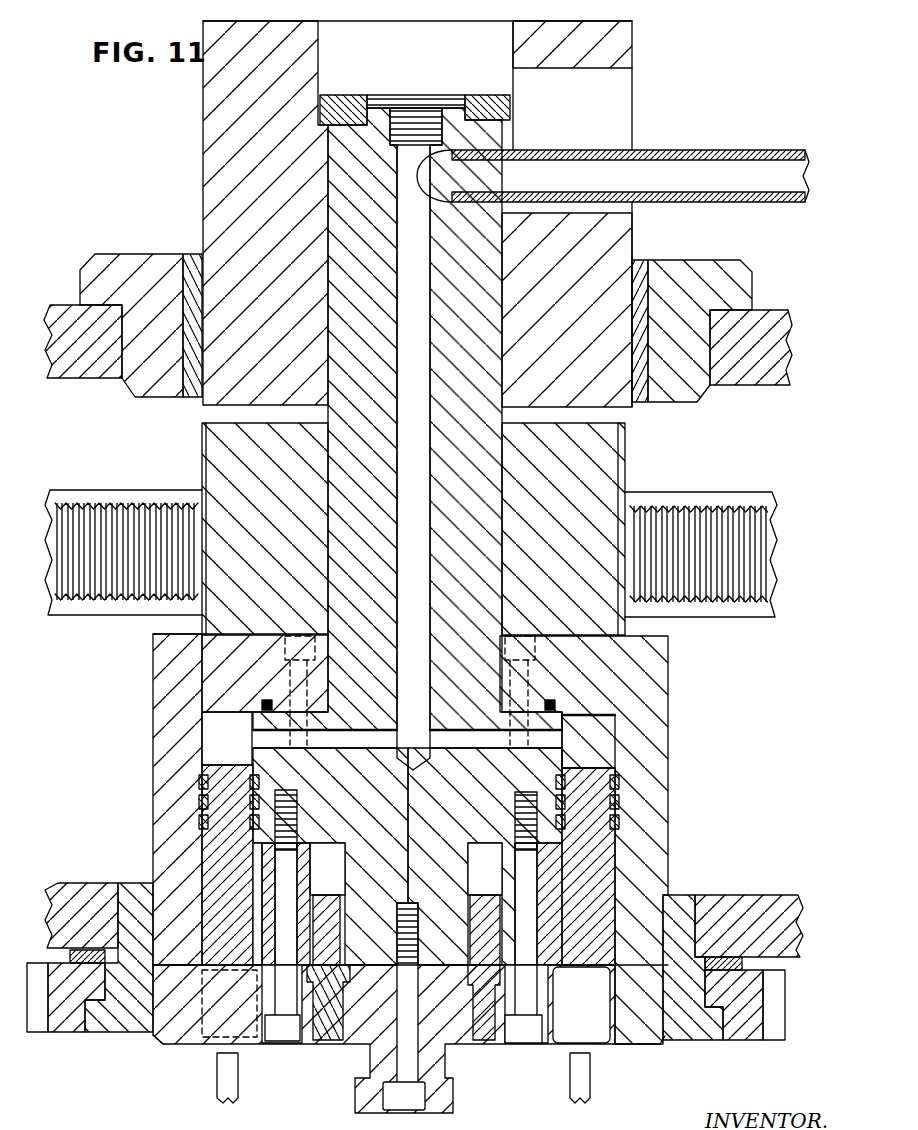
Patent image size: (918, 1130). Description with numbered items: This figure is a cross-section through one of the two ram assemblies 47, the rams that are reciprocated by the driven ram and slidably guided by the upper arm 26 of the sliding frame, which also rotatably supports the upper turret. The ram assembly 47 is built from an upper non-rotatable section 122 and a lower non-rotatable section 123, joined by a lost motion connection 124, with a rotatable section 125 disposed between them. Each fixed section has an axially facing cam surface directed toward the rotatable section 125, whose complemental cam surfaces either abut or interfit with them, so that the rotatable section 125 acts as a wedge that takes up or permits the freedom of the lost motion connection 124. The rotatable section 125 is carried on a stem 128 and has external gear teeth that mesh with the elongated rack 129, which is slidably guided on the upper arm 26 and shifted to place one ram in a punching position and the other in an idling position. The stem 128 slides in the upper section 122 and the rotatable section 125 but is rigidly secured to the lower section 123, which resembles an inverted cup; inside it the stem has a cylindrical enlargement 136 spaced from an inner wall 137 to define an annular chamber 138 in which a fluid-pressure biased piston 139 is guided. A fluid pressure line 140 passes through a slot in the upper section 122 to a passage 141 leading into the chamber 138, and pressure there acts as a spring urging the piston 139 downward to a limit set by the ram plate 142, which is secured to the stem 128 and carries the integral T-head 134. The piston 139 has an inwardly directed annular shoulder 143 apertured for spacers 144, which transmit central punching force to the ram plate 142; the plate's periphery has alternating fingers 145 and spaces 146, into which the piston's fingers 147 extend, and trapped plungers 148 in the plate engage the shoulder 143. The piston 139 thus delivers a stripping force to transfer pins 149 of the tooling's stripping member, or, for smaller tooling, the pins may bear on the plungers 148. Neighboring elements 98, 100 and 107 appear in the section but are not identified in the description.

The upper arm 26 is at (62, 310).
The ram assembly 47 is at (203, 155).
The base plate 98 is at (752, 1044).
The support plate 100 is at (700, 1044).
The flange 107 is at (88, 372).
The upper non-rotatable section 122 is at (618, 43).
The lower non-rotatable section 123 is at (652, 769).
The lost motion connection 124 is at (503, 407).
The rotatable section 125 is at (625, 473).
The stem 128 is at (507, 533).
The rack 129 is at (712, 492).
The T-head 134 is at (436, 1100).
The cylindrical enlargement 136 is at (553, 768).
The inner wall 137 is at (615, 719).
The annular chamber 138 is at (200, 740).
The piston 139 is at (200, 843).
The fluid pressure line 140 is at (613, 159).
The passage 141 is at (418, 205).
The ram plate 142 is at (385, 1046).
The annular shoulder 143 is at (328, 897).
The spacers 144 is at (500, 897).
The fingers 145 is at (206, 1046).
The spaces 146 is at (636, 1046).
The fingers 147 is at (593, 1013).
The trapped plungers 148 is at (302, 1046).
The transfer pins 149 is at (236, 1096).